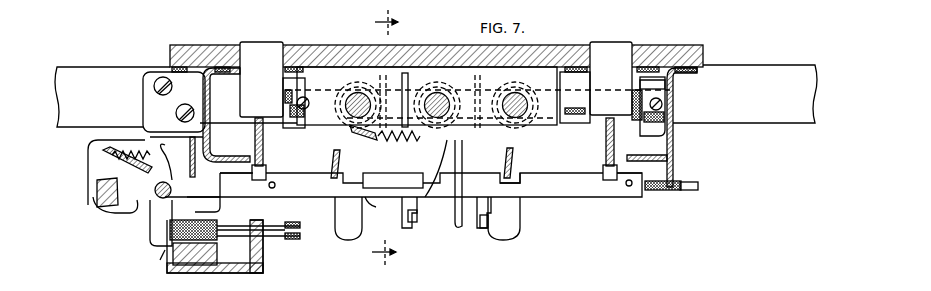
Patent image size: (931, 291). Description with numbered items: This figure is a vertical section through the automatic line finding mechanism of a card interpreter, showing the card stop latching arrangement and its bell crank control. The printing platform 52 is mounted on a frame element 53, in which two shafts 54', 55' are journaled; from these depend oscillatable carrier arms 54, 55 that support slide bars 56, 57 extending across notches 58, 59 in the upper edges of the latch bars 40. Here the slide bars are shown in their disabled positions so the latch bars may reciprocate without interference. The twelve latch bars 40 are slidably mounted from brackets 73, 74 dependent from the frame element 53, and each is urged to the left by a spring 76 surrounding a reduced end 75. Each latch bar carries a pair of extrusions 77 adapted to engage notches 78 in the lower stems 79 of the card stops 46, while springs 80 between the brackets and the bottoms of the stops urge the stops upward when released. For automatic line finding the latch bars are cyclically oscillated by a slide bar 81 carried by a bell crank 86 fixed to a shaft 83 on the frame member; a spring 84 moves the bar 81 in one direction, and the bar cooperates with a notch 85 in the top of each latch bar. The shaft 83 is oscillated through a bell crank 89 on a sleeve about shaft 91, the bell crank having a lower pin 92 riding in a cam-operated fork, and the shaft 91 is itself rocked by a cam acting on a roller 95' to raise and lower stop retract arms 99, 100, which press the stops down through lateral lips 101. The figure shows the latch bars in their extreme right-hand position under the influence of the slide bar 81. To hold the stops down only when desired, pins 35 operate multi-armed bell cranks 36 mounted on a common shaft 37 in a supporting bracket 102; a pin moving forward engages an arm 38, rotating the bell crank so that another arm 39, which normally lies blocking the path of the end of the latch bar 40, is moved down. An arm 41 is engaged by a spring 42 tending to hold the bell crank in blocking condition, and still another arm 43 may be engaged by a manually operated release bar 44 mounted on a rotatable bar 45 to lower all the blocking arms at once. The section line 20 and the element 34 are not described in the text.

The section line 20 is at (396, 140).
The plunger rods 34 is at (298, 233).
The pin 35 is at (168, 250).
The multi-armed bell crank 36 is at (153, 220).
The common shaft 37 is at (158, 197).
The arm 38 is at (160, 260).
The arm 39 is at (220, 205).
The latch bar 40 is at (590, 198).
The arm 41 is at (172, 145).
The spring 42 is at (127, 145).
The arm 43 is at (100, 173).
The manually operated release bar 44 is at (135, 210).
The rotatable bar 45 is at (95, 195).
The card stop 46 is at (265, 50).
The printing platform 52 is at (338, 47).
The frame element 53 is at (88, 72).
The carrier arm 54 is at (348, 228).
The carrier arm 55 is at (523, 218).
The shaft 54' is at (477, 97).
The shaft 55' is at (519, 97).
The slide bar 56 is at (334, 162).
The slide bar 57 is at (514, 160).
The notch 58 is at (365, 198).
The notch 59 is at (520, 180).
The bracket 73 is at (207, 116).
The bracket 74 is at (675, 160).
The reduced end 75 is at (690, 192).
The spring 76 is at (655, 192).
The extrusion 77 is at (280, 192).
The notch 78 is at (276, 184).
The lower stem 79 is at (255, 172).
The spring 80 is at (263, 156).
The slide bar 81 is at (445, 185).
The shaft 83 is at (436, 95).
The spring 84 is at (398, 140).
The notch 85 is at (423, 178).
The bell crank 86 is at (458, 210).
The bell crank 89 is at (404, 220).
The shaft 91 is at (577, 100).
The pin 92 is at (412, 222).
The roller 95' is at (493, 238).
The stop retract arm 99 is at (282, 100).
The stop retract arm 100 is at (667, 92).
The lateral lip 101 is at (290, 118).
The supporting bracket 102 is at (103, 142).